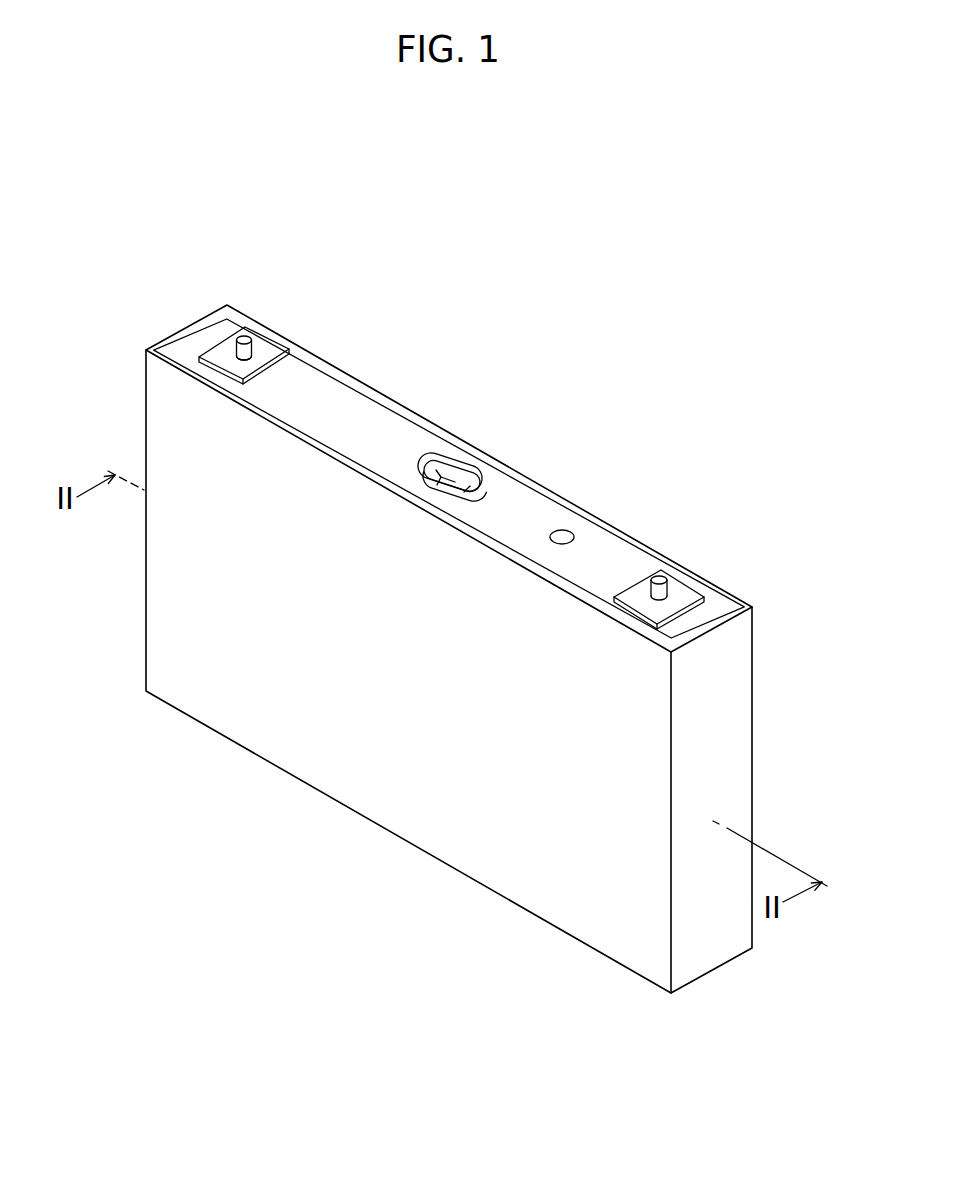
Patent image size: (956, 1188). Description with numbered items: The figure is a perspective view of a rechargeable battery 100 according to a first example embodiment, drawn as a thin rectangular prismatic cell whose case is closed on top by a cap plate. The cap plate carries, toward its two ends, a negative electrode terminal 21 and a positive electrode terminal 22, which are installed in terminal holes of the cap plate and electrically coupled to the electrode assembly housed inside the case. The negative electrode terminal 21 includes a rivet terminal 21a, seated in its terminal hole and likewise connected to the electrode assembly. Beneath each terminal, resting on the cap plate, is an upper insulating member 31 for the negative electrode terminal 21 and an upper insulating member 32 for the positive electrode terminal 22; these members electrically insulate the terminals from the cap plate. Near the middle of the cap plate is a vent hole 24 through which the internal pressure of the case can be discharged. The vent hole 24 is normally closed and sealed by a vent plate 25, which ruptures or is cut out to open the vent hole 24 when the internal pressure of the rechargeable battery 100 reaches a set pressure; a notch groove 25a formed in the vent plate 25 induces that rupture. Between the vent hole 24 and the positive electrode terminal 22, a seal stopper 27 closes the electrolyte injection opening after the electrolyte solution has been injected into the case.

The rechargeable battery 100 is at (532, 309).
The negative electrode terminal 21 is at (256, 331).
The rivet terminal 21a is at (251, 346).
The positive electrode terminal 22 is at (671, 573).
The vent hole 24 is at (437, 457).
The vent plate 25 is at (460, 475).
The notch groove 25a is at (472, 477).
The seal stopper 27 is at (562, 532).
The upper insulating member 31 is at (218, 350).
The upper insulating member 32 is at (692, 590).